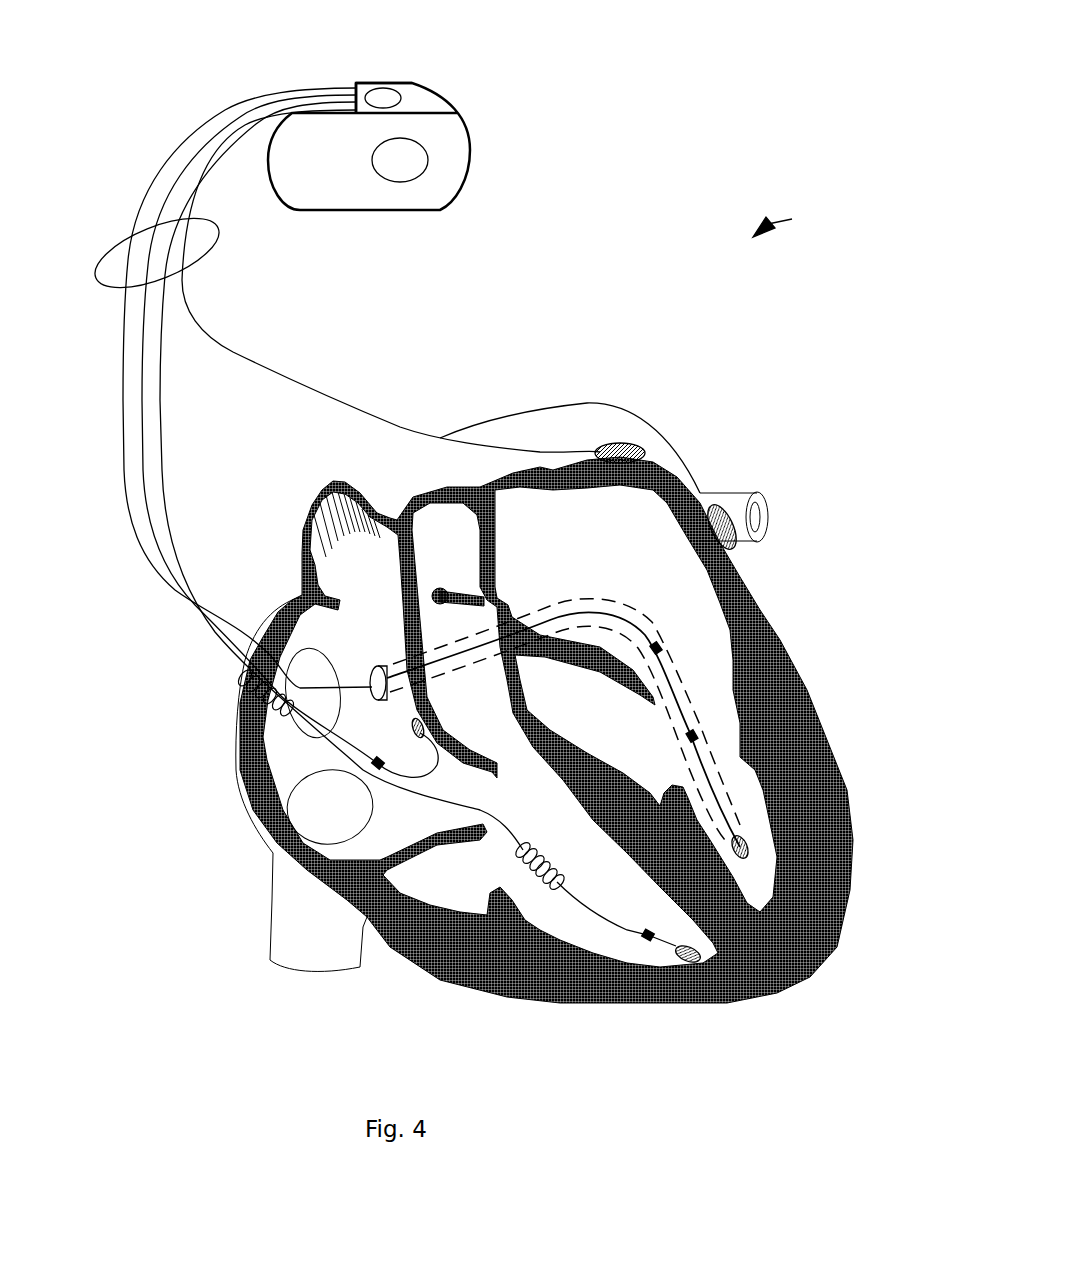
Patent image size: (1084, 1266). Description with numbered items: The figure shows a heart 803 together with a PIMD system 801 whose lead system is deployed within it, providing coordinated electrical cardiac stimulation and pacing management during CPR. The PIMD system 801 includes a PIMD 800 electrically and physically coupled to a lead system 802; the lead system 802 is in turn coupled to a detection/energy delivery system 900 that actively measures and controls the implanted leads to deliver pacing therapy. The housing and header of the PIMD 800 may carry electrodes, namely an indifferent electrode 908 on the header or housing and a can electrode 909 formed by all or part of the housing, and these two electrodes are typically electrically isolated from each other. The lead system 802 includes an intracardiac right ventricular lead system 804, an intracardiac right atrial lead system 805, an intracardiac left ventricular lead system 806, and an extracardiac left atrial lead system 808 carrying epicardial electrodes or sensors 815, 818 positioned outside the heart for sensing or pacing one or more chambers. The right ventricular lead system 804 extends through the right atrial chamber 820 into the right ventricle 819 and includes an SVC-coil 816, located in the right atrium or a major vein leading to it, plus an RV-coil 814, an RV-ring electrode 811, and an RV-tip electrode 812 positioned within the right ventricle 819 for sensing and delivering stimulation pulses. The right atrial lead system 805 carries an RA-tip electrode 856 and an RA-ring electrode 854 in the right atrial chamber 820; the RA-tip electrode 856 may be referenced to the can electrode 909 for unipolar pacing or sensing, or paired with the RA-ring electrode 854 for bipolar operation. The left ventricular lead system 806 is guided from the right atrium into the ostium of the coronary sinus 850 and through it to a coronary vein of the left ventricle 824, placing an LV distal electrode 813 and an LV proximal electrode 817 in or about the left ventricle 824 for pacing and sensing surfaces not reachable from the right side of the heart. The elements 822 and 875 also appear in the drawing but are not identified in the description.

The PIMD 800 is at (417, 83).
The PIMD system 801 is at (798, 223).
The lead system 802 is at (120, 237).
The heart 803 is at (807, 693).
The right ventricular lead system 804 is at (120, 413).
The right atrial lead system 805 is at (142, 445).
The left ventricular lead system 806 is at (160, 480).
The extracardiac left atrial lead system 808 is at (268, 373).
The RV-ring electrode 811 is at (648, 937).
The RV-tip electrode 812 is at (680, 948).
The LV distal electrode 813 is at (745, 856).
The RV-coil 814 is at (522, 857).
The epicardial electrode 815 is at (610, 447).
The SVC-coil 816 is at (240, 690).
The LV proximal electrode 817 is at (698, 737).
The epicardial electrode 818 is at (717, 507).
The right ventricle 819 is at (543, 804).
The right atrial chamber 820 is at (316, 767).
The left atrium 822 is at (624, 537).
The left ventricle 824 is at (658, 744).
The coronary sinus 850 is at (387, 672).
The RA-ring electrode 854 is at (400, 748).
The RA-tip electrode 856 is at (413, 724).
The transseptal lead 875 is at (662, 651).
The detection/energy delivery system 900 is at (327, 190).
The indifferent electrode 908 is at (377, 93).
The can electrode 909 is at (427, 158).